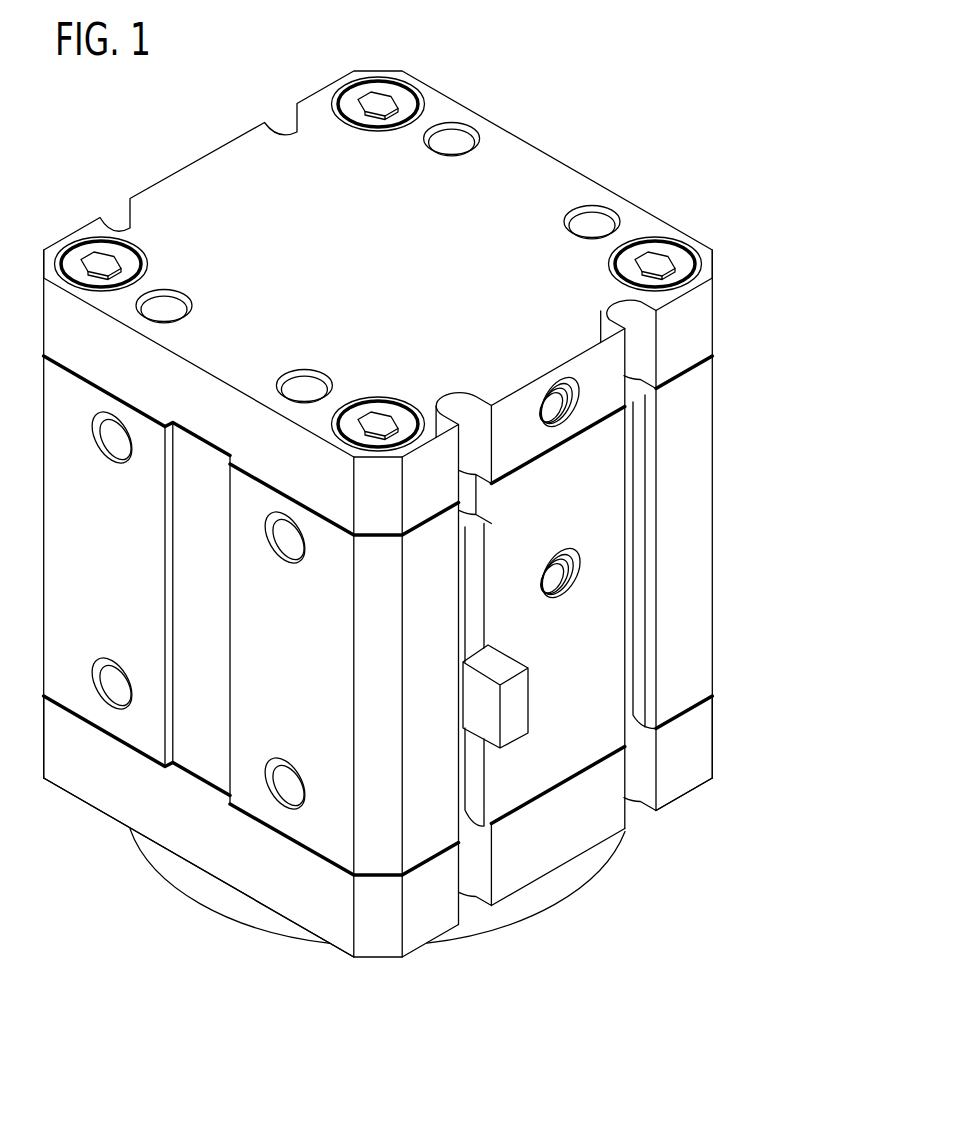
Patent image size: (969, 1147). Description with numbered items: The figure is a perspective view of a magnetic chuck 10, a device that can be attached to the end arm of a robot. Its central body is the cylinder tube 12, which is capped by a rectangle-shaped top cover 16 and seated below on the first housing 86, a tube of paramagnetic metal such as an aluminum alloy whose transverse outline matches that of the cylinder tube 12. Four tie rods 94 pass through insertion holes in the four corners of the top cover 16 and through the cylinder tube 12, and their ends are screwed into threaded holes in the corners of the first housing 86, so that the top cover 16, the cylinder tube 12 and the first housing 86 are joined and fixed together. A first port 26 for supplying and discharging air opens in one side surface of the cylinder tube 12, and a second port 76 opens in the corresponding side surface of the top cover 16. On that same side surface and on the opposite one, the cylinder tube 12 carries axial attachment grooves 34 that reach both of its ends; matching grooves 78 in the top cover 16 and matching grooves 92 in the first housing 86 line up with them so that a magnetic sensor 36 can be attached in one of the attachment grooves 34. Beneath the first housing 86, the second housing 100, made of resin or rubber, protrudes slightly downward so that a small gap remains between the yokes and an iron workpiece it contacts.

The magnetic chuck 10 is at (229, 89).
The cylinder tube 12 is at (738, 469).
The top cover 16 is at (510, 152).
The first port 26 is at (561, 573).
The attachment grooves 34 is at (637, 609).
The magnetic sensor 36 is at (516, 700).
The second port 76 is at (562, 408).
The grooves 78 is at (621, 311).
The first housing 86 is at (97, 786).
The grooves 92 is at (648, 778).
The tie rods 94 is at (650, 252).
The second housing 100 is at (514, 910).